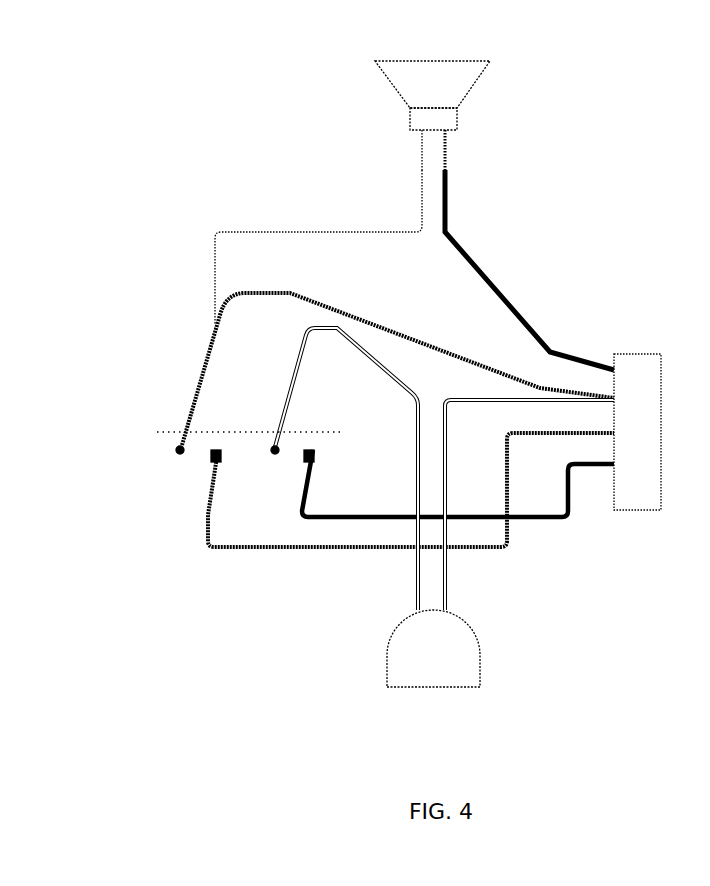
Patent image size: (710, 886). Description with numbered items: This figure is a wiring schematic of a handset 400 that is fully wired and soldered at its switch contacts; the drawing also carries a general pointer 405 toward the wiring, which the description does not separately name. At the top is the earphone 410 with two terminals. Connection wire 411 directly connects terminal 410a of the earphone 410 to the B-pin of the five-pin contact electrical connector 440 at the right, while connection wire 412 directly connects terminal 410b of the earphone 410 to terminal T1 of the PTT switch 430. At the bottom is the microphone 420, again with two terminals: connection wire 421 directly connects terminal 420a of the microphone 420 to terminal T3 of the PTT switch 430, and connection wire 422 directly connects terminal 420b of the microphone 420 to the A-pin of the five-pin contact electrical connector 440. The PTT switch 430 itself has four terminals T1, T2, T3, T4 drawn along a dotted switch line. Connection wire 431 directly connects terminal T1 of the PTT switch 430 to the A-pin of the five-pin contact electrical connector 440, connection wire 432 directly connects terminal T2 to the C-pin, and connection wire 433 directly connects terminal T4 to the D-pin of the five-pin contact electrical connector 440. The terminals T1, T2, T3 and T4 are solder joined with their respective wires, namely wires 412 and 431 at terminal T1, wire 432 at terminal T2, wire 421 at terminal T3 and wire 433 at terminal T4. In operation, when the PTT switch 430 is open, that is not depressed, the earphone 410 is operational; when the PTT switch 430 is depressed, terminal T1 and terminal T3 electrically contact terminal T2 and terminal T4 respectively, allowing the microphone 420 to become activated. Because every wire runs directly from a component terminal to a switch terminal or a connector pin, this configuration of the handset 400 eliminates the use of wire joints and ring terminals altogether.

The handset 400 is at (126, 108).
The cable harness 405 is at (188, 197).
The earphone 410 is at (432, 71).
The terminal of earphone 410a is at (474, 151).
The terminal of earphone 410b is at (395, 151).
The connection wire 411 is at (529, 270).
The connection wire 412 is at (318, 247).
The microphone 420 is at (433, 676).
The terminal of microphone 420a is at (388, 605).
The terminal of microphone 420b is at (475, 605).
The connection wire 421 is at (346, 459).
The connection wire 422 is at (529, 495).
The PTT switch 430 is at (190, 431).
The connection wire 431 is at (398, 369).
The connection wire 432 is at (411, 506).
The connection wire 433 is at (458, 483).
The 5-pin contact electrical connector 440 is at (637, 406).
The terminal of PTT switch T1 is at (169, 423).
The terminal of PTT switch T2 is at (203, 475).
The terminal of PTT switch T3 is at (266, 420).
The terminal of PTT switch T4 is at (293, 474).